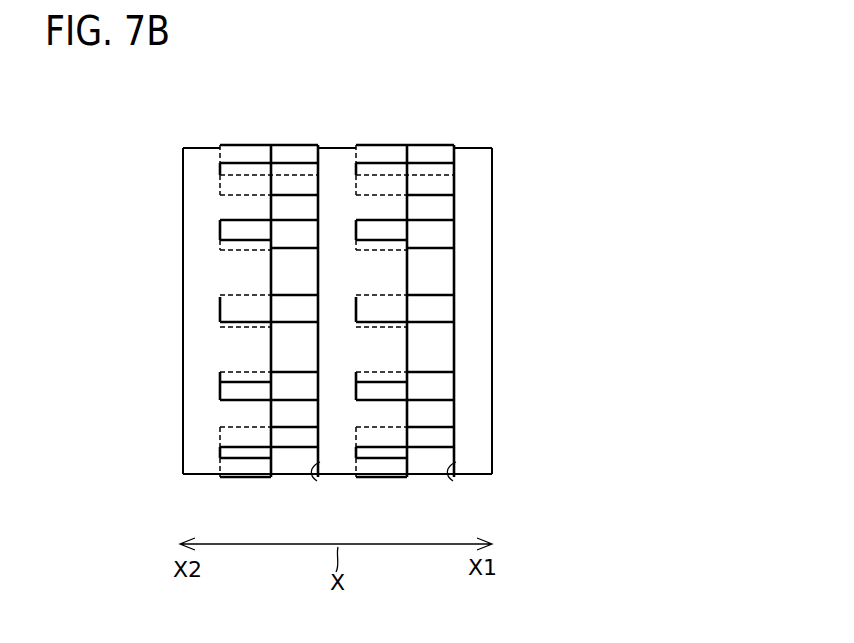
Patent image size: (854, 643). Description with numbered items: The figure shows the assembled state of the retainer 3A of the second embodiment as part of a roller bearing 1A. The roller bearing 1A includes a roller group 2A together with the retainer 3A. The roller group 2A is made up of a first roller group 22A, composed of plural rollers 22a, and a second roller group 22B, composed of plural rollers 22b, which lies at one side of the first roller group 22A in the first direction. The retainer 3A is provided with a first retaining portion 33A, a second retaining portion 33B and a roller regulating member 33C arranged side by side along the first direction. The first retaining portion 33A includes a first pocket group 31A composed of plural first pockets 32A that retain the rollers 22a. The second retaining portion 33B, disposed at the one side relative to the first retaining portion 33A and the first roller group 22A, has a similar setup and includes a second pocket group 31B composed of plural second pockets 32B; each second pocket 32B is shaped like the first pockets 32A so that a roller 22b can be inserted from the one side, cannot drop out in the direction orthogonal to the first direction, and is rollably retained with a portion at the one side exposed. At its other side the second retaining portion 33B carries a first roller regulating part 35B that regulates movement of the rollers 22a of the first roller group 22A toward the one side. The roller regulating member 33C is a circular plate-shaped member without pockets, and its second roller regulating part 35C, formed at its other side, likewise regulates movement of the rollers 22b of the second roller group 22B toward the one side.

The roller bearing 1A is at (373, 270).
The roller group 2A is at (244, 297).
The retainer 3A is at (456, 296).
The first roller group 22A is at (260, 114).
The second roller group 22B is at (397, 114).
The roller 22a is at (300, 145).
The roller 22b is at (437, 145).
The first pocket group 31A is at (150, 388).
The second pocket group 31B is at (545, 388).
The first pocket 32A is at (225, 232).
The second pocket 32B is at (362, 232).
The first retaining portion 33A is at (201, 114).
The second retaining portion 33B is at (337, 114).
The roller regulating member 33C is at (472, 114).
The first roller regulating part 35B is at (314, 480).
The second roller regulating part 35C is at (450, 480).